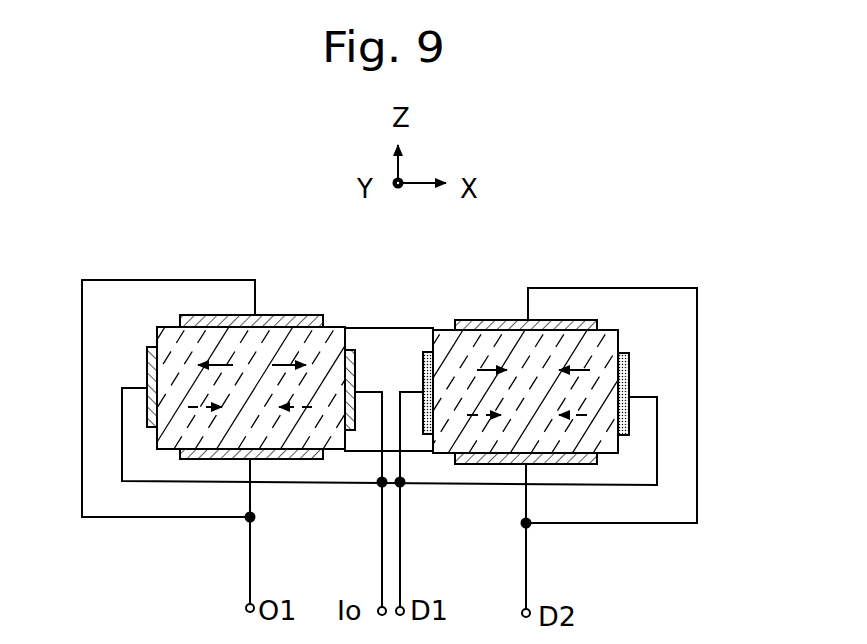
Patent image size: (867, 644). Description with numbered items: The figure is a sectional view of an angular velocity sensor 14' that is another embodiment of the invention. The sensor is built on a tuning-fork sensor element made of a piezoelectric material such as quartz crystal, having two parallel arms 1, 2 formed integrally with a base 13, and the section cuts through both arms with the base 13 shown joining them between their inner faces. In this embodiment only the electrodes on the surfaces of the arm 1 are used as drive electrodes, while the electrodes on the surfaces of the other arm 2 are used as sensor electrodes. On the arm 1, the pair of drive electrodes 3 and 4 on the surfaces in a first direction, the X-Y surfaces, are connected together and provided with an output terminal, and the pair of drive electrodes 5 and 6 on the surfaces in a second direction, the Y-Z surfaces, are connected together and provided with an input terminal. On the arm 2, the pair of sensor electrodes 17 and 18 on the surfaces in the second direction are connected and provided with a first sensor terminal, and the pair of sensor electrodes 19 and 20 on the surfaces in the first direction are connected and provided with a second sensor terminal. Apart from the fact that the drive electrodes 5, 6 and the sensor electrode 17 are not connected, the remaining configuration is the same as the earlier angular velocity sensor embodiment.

The arm 1 is at (168, 342).
The arm 2 is at (611, 347).
The drive electrode 3 is at (203, 458).
The drive electrode 4 is at (207, 322).
The drive electrode 5 is at (147, 405).
The drive electrode 6 is at (357, 413).
The base 13 is at (388, 345).
The angular velocity sensor 14' is at (448, 267).
The sensor electrode 17 is at (568, 464).
The sensor electrode 18 is at (478, 326).
The sensor electrode 19 is at (421, 413).
The sensor electrode 20 is at (630, 370).